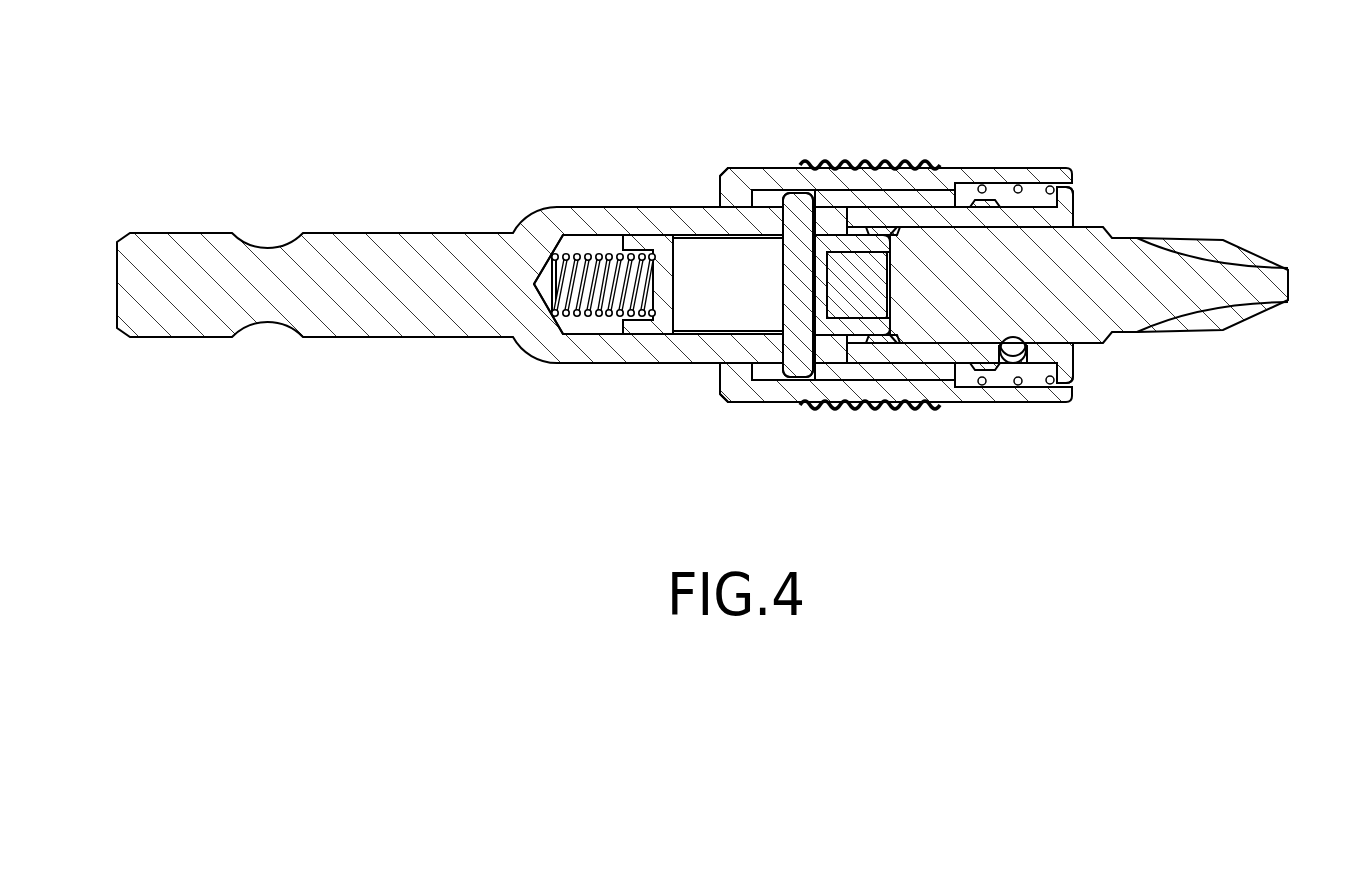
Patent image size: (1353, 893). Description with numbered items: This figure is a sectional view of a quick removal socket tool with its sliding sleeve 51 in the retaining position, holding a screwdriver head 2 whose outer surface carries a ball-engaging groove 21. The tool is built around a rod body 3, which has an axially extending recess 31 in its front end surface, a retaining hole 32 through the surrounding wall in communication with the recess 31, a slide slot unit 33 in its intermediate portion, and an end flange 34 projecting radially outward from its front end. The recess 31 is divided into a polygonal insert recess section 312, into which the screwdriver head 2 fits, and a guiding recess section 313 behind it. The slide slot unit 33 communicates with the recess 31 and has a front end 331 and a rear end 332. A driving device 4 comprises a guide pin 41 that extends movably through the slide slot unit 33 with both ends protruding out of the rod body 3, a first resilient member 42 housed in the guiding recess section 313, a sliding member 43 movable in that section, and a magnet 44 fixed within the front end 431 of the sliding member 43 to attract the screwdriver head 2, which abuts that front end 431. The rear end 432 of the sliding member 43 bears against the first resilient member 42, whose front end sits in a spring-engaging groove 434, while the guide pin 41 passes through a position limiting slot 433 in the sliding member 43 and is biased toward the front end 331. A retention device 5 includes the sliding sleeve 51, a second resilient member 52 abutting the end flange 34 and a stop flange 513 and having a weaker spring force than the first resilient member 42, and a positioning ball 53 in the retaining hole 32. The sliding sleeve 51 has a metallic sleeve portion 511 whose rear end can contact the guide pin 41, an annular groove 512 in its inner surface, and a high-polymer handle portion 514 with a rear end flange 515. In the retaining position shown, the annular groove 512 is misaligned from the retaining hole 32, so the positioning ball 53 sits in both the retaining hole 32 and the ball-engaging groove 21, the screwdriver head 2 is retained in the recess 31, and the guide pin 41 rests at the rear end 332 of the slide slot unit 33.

The screwdriver head 2 is at (1089, 298).
The ball-engaging groove 21 is at (1034, 314).
The rod body 3 is at (647, 265).
The recess 31 is at (1012, 265).
The insert recess section 312 is at (873, 228).
The guiding recess section 313 is at (611, 245).
The retaining hole 32 is at (1027, 364).
The slide slot unit 33 is at (841, 218).
The front end of slide slot unit 331 is at (845, 215).
The rear end of slide slot unit 332 is at (779, 215).
The end flange 34 is at (1074, 193).
The driving device 4 is at (709, 275).
The guide pin 41 is at (800, 205).
The first resilient member 42 is at (641, 251).
The sliding member 43 is at (602, 362).
The front end of sliding member 431 is at (835, 329).
The rear end of sliding member 432 is at (630, 336).
The position limiting slot 433 is at (760, 369).
The spring-engaging groove 434 is at (630, 321).
The magnet 44 is at (870, 312).
The retention device 5 is at (882, 265).
The sliding sleeve 51 is at (1063, 176).
The metallic sleeve portion 511 is at (935, 381).
The annular groove 512 is at (968, 378).
The stop flange 513 is at (970, 192).
The handle portion 514 is at (958, 174).
The rear end flange 515 is at (721, 190).
The second resilient member 52 is at (1052, 385).
The positioning ball 53 is at (1012, 364).